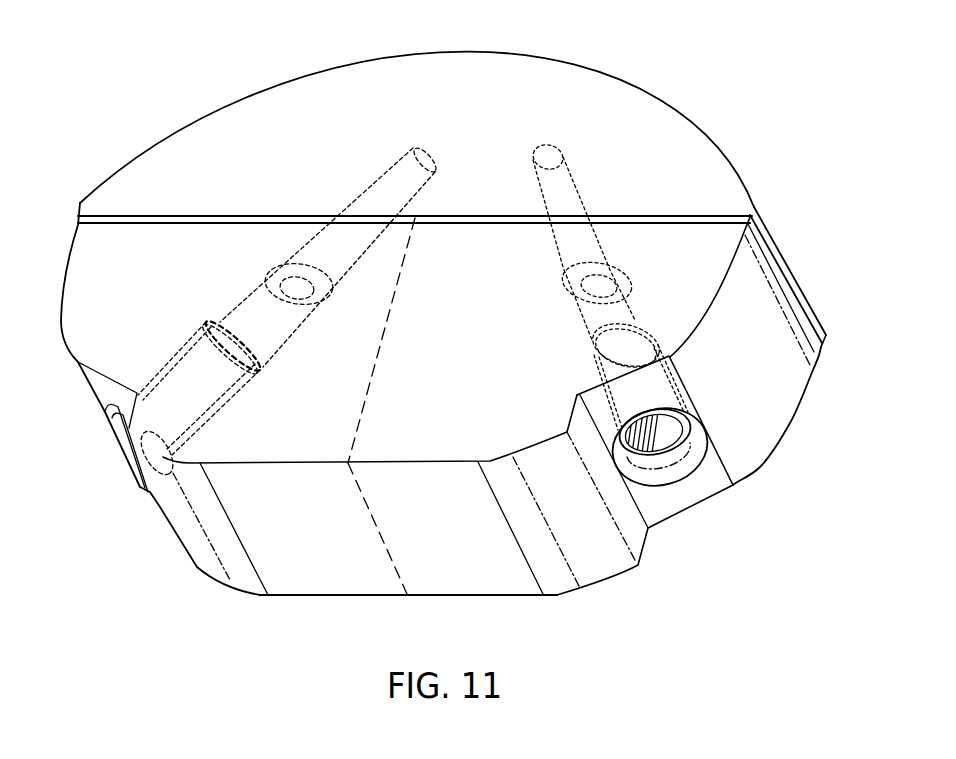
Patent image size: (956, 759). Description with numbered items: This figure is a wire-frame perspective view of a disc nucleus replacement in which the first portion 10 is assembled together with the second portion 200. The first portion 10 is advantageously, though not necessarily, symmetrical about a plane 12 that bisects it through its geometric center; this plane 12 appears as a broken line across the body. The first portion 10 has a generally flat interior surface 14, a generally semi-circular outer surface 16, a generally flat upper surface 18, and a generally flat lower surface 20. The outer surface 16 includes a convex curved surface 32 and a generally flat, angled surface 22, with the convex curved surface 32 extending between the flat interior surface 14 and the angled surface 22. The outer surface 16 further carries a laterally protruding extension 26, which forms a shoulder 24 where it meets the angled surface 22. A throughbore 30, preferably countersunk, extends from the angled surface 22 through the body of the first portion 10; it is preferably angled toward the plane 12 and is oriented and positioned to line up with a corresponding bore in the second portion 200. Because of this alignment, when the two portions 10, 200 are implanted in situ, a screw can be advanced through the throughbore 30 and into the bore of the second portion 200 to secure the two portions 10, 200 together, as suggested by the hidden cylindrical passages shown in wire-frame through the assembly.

The second portion 200 is at (155, 95).
The first portion 10 is at (150, 590).
The interior surface 14 is at (633, 228).
The upper surface 18 is at (513, 243).
The outer surface 16 is at (747, 265).
The convex curved surface 32 is at (750, 347).
The angled surface 22 is at (707, 481).
The shoulder 24 is at (630, 522).
The laterally protruding extension 26 is at (493, 547).
The lower surface 20 is at (419, 595).
The plane 12 is at (390, 318).
The throughbore 30 is at (622, 395).